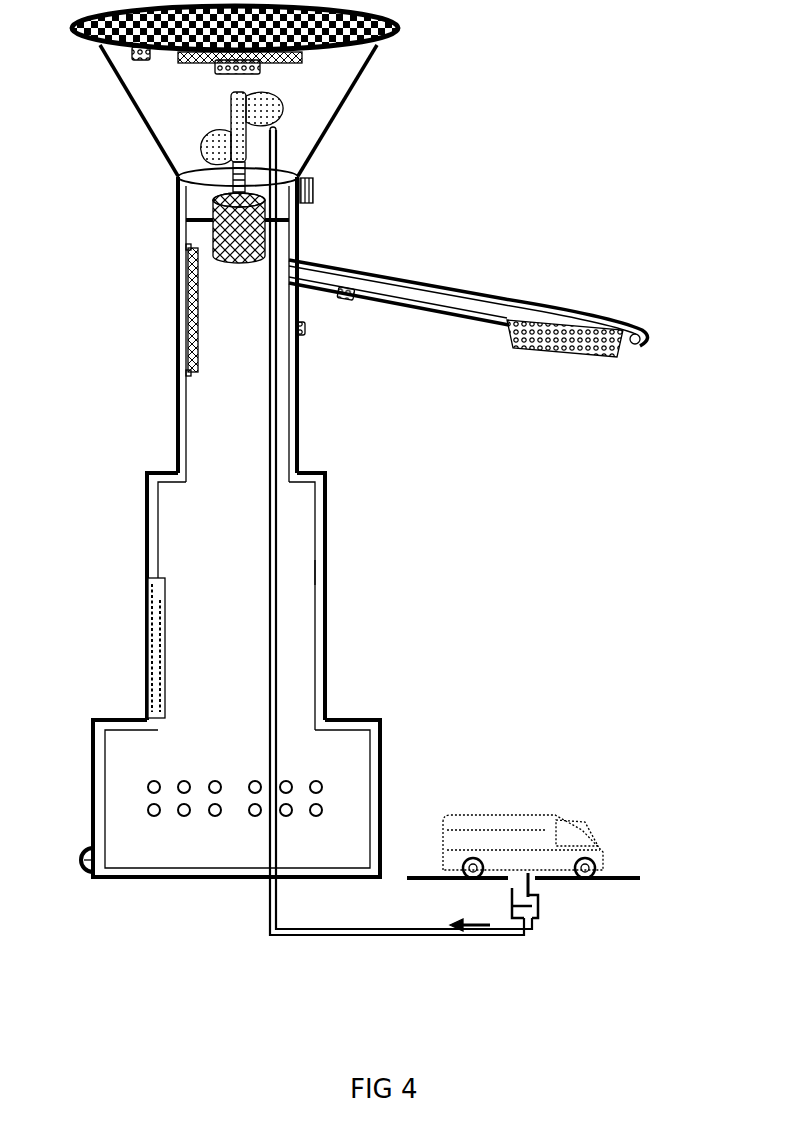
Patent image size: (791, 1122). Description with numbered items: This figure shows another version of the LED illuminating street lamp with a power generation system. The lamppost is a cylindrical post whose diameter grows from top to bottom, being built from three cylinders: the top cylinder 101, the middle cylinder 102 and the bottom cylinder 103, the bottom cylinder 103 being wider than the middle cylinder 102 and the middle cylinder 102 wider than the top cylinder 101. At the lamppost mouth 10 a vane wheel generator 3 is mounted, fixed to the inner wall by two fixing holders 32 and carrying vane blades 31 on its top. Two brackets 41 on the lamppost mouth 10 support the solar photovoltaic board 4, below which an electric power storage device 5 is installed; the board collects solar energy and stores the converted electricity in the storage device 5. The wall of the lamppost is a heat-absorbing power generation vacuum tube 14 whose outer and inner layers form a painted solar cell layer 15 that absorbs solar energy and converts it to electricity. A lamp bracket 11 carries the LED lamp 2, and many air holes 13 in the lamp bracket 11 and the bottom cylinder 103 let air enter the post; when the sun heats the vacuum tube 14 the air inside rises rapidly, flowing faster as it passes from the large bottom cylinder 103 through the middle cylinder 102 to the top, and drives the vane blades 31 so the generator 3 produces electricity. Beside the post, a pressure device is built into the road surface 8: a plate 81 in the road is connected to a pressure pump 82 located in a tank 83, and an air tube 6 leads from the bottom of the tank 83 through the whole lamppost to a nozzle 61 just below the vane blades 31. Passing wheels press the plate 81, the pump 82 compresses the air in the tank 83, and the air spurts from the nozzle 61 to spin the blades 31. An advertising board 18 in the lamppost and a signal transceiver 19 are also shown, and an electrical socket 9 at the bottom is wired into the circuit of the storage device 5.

The LED lamp 2 is at (217, 66).
The vane wheel generator 3 is at (265, 233).
The solar photovoltaic board 4 is at (397, 32).
The electric power storage device 5 is at (302, 57).
The air tube 6 is at (276, 529).
The road surface 8 is at (640, 878).
The electrical socket 9 is at (78, 857).
The lamppost mouth 10 is at (205, 175).
The lamp bracket 11 is at (413, 288).
The air holes 13 is at (641, 339).
The heat-absorbing power generation vacuum tube 14 is at (315, 572).
The painted solar cell layer 15 is at (325, 617).
The advertising board 18 is at (150, 637).
The signal transceiver 19 is at (313, 190).
The vane blades 31 is at (280, 107).
The fixing holders 32 is at (178, 213).
The bracket 41 is at (358, 82).
The nozzle 61 is at (273, 130).
The plate 81 is at (528, 892).
The pressure pump 82 is at (530, 906).
The tank 83 is at (535, 912).
The top cylinder of the lamppost 101 is at (210, 397).
The middle cylinder of the lamppost 102 is at (215, 559).
The bottom cylinder of the lamppost 103 is at (148, 765).